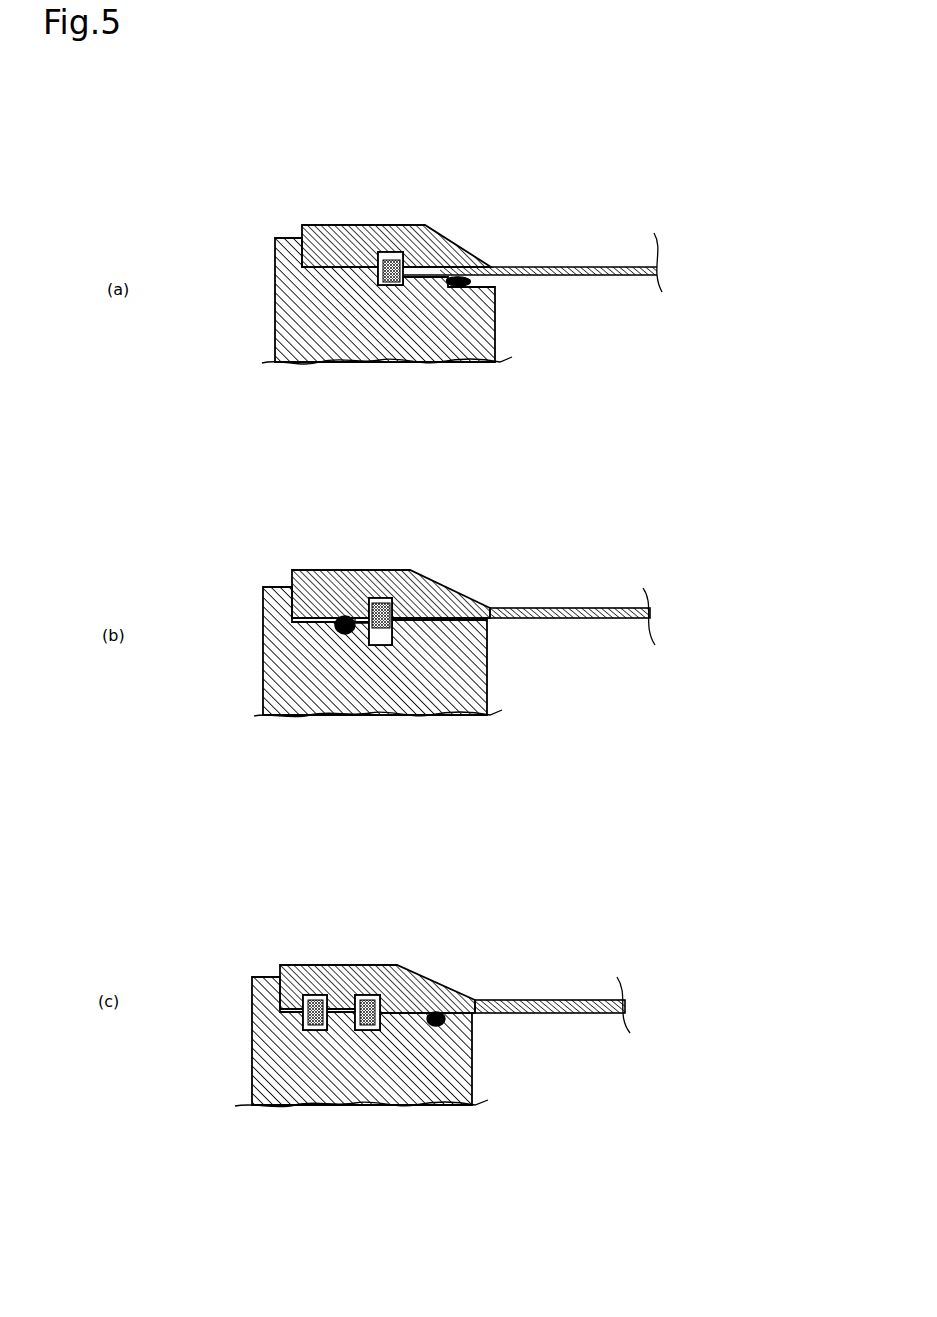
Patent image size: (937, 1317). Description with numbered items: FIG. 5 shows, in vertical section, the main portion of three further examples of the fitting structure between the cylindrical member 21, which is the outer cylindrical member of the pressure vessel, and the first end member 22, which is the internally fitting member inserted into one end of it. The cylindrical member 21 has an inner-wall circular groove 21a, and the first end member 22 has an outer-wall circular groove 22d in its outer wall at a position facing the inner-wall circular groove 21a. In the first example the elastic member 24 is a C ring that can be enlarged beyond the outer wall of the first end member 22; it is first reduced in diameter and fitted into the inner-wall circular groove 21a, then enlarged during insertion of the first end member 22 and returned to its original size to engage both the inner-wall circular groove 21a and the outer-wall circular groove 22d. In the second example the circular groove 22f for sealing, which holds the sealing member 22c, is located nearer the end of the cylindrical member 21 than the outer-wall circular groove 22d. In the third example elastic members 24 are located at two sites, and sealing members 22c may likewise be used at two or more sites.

The cylindrical member 21 is at (452, 574).
The inner-wall circular groove 21a is at (374, 247).
The first end member 22 is at (266, 297).
The sealing member 22c is at (452, 276).
The outer-wall circular groove 22d is at (394, 287).
The circular groove for sealing 22f is at (340, 636).
The elastic member 24 is at (393, 258).